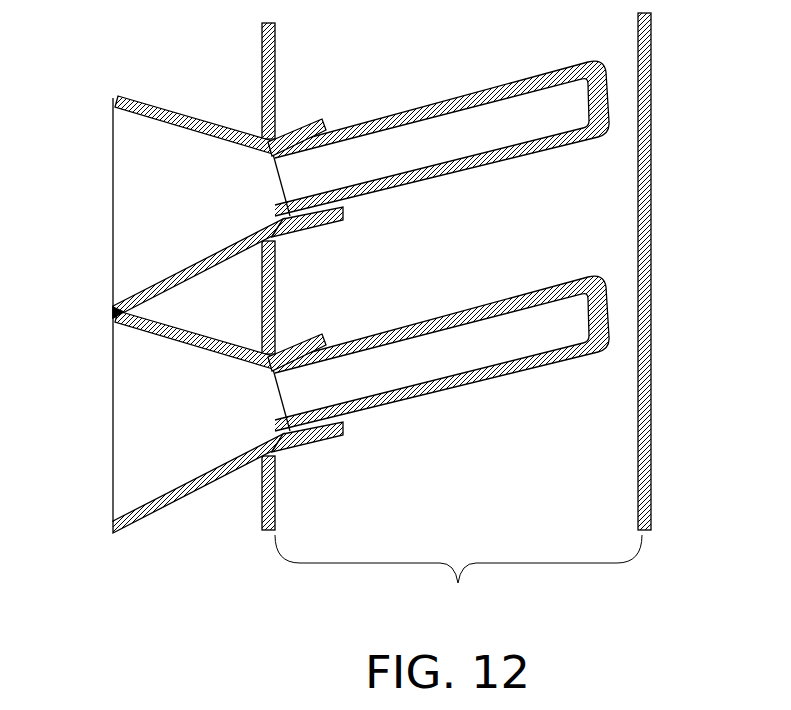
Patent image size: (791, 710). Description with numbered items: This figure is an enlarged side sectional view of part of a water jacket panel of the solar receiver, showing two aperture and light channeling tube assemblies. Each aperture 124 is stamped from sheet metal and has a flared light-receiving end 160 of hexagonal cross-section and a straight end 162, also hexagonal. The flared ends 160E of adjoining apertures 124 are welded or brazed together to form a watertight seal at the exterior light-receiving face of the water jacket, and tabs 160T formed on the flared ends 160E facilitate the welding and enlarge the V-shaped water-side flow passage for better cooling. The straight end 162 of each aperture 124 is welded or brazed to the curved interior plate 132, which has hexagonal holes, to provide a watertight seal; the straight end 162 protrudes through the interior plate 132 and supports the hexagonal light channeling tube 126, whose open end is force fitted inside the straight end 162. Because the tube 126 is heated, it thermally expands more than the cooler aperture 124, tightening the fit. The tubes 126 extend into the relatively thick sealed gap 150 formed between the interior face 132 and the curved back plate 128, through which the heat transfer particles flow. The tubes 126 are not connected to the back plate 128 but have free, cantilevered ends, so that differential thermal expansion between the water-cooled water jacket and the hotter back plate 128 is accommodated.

The aperture 124 is at (190, 203).
The light channeling tube 126 is at (477, 308).
The back plate 128 is at (650, 297).
The interior face 132 is at (275, 73).
The sealed gap 150 is at (458, 576).
The flared light-receiving end 160 is at (156, 321).
The tab 160T is at (153, 92).
The flared end 160E is at (113, 157).
The straight end 162 is at (318, 340).